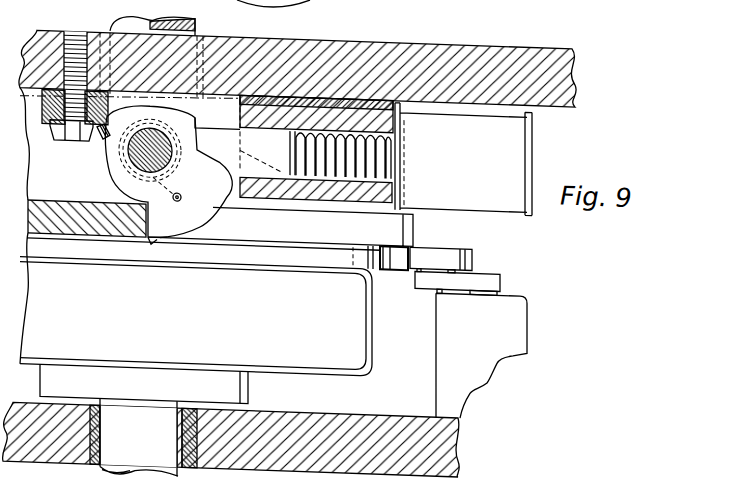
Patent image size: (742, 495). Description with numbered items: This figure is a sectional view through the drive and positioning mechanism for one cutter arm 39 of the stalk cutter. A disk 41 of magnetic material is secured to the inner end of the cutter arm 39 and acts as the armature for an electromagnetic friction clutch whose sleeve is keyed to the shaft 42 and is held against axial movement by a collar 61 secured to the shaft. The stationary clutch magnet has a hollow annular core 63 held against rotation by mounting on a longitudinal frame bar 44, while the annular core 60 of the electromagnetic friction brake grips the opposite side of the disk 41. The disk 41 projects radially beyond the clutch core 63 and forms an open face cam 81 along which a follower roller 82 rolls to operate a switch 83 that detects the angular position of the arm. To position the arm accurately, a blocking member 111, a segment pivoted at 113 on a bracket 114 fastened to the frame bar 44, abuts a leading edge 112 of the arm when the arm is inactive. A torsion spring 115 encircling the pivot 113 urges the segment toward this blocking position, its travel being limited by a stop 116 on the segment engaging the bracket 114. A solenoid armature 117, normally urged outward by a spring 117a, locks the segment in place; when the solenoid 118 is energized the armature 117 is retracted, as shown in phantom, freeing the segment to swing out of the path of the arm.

The cutter arm 39 is at (93, 227).
The disk 41 is at (410, 219).
The shaft 42 is at (197, 15).
The longitudinal frame bar 44 is at (573, 68).
The annular core 60 is at (406, 148).
The collar 61 is at (249, 381).
The hollow annular core 63 is at (368, 337).
The open face cam 81 is at (393, 256).
The follower roller 82 is at (473, 241).
The switch 83 is at (519, 312).
The blocking member 111 is at (168, 229).
The leading edge 112 is at (152, 235).
The pivot 113 is at (133, 157).
The bracket 114 is at (241, 105).
The torsion spring 115 is at (176, 195).
The stop 116 is at (98, 137).
The solenoid armature 117 is at (233, 164).
The spring 117a is at (398, 123).
The solenoid 118 is at (485, 191).